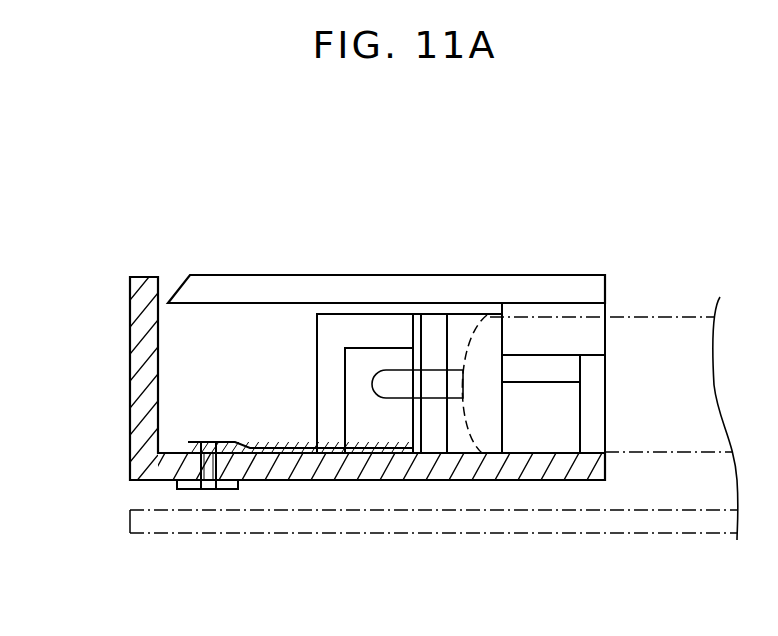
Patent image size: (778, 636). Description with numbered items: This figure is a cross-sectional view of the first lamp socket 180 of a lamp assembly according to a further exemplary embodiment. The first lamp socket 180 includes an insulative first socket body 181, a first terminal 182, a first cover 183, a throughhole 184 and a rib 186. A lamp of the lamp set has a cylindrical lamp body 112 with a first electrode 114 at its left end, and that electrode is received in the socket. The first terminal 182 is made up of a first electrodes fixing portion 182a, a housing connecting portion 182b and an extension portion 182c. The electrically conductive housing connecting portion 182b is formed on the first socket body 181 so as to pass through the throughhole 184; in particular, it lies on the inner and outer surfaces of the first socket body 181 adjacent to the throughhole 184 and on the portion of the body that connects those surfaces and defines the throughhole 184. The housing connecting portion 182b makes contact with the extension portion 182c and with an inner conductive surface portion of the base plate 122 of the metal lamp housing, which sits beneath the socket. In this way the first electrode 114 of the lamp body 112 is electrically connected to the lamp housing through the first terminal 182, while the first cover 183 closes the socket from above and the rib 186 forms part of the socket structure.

The first lamp socket 180 is at (118, 311).
The first socket body 181 is at (137, 372).
The first terminal 182 is at (370, 173).
The first electrodes fixing portion 182a is at (368, 353).
The housing connecting portion 182b is at (191, 447).
The extension portion 182c is at (270, 450).
The first cover 183 is at (549, 275).
The throughhole 184 is at (208, 488).
The rib 186 is at (333, 430).
The first electrode 114 is at (435, 372).
The cylindrical lamp body 112 is at (672, 317).
The base plate 122 is at (430, 533).